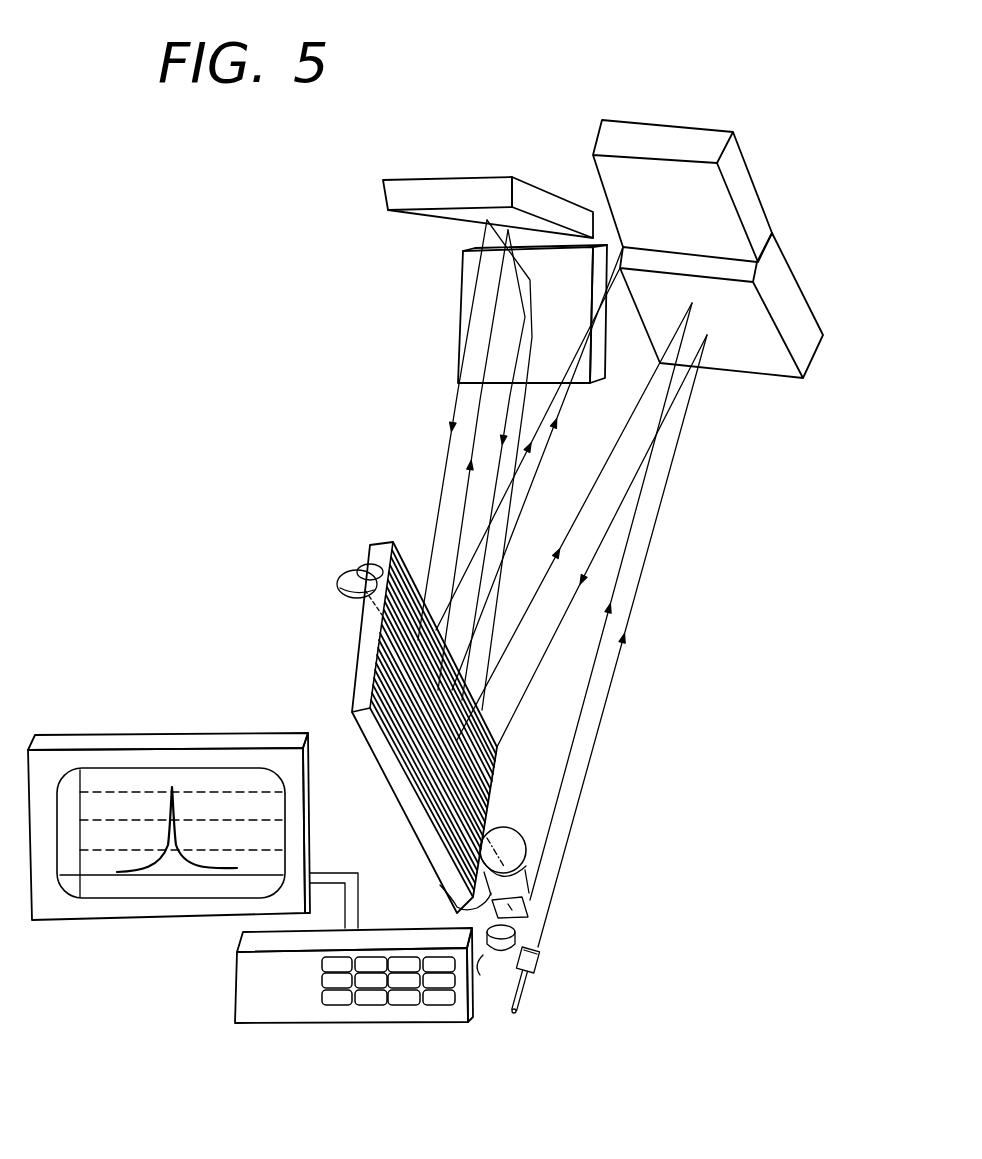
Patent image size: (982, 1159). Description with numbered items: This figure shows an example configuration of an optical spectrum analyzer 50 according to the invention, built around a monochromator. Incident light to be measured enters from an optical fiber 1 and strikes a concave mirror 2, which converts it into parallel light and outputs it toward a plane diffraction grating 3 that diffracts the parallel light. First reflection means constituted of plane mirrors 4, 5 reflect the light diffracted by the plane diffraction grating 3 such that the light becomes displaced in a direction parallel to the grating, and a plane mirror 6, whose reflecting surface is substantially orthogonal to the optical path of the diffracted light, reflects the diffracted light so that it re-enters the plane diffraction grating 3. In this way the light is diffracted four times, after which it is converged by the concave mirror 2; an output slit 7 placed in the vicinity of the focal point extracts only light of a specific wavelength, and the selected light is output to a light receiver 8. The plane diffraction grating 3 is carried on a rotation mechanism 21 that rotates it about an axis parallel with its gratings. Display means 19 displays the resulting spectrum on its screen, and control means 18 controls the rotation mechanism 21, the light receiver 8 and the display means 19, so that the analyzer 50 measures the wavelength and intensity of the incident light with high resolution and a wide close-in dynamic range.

The optical spectrum analyzer 50 is at (497, 78).
The optical fiber 1 is at (540, 960).
The concave mirror 2 is at (795, 302).
The plane diffraction grating 3 is at (363, 677).
The plane mirror 4 is at (465, 293).
The plane mirror 5 is at (390, 195).
The plane mirror 6 is at (752, 195).
The output slit 7 is at (526, 898).
The light receiver 8 is at (502, 947).
The control means 18 is at (275, 1013).
The display means 19 is at (62, 905).
The rotation mechanism 21 is at (507, 838).